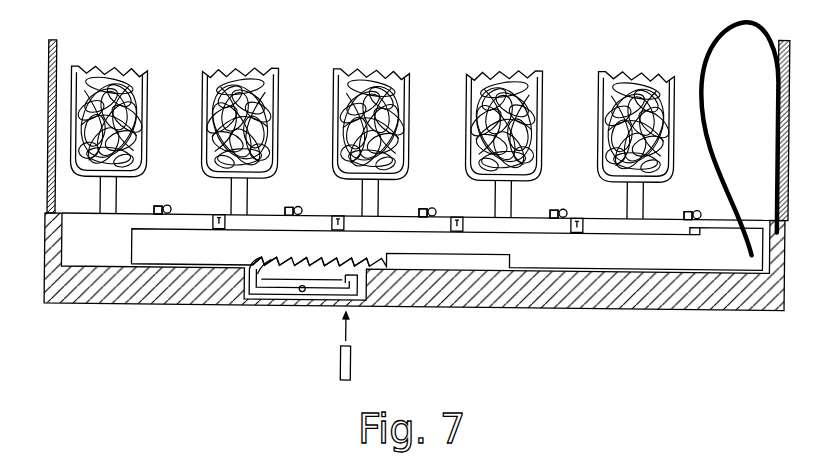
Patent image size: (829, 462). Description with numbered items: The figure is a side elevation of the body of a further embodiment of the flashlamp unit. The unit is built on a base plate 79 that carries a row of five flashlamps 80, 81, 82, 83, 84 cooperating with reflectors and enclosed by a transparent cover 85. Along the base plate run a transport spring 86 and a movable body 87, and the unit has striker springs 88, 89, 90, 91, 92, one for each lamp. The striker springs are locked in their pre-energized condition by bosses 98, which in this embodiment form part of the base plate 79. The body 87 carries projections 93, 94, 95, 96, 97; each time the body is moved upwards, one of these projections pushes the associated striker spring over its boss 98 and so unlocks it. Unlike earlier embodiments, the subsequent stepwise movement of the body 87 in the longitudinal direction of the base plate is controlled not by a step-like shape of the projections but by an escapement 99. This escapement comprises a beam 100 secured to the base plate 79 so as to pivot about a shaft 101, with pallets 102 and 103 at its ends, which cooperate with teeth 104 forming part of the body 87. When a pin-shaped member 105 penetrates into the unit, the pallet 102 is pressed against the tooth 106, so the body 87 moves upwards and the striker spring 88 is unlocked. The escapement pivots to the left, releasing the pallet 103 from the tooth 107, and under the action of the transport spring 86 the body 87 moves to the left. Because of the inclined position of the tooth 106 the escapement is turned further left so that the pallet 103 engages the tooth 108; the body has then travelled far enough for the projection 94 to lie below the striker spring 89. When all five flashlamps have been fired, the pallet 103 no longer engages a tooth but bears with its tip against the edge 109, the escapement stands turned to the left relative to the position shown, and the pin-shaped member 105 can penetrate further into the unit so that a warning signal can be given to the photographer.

The base plate 79 is at (577, 293).
The flashlamp 80 is at (648, 98).
The flashlamp 81 is at (511, 100).
The flashlamp 82 is at (380, 105).
The flashlamp 83 is at (251, 84).
The flashlamp 84 is at (114, 92).
The transparent cover 85 is at (48, 181).
The transport spring 86 is at (706, 52).
The movable body 87 is at (698, 256).
The striker spring 88 is at (701, 206).
The striker spring 89 is at (567, 205).
The striker spring 90 is at (434, 205).
The striker spring 91 is at (299, 204).
The striker spring 92 is at (167, 204).
The projection 93 is at (696, 228).
The projection 94 is at (584, 222).
The projection 95 is at (458, 220).
The projection 96 is at (338, 218).
The projection 97 is at (219, 220).
The boss 98 is at (154, 209).
The escapement 99 is at (287, 286).
The beam 100 is at (316, 288).
The shaft 101 is at (305, 291).
The pallet 102 is at (349, 278).
The pallet 103 is at (255, 273).
The teeth 104 is at (286, 251).
The pin-shaped member 105 is at (353, 354).
The tooth 106 is at (343, 261).
The tooth 107 is at (254, 256).
The tooth 108 is at (276, 263).
The edge 109 is at (334, 257).